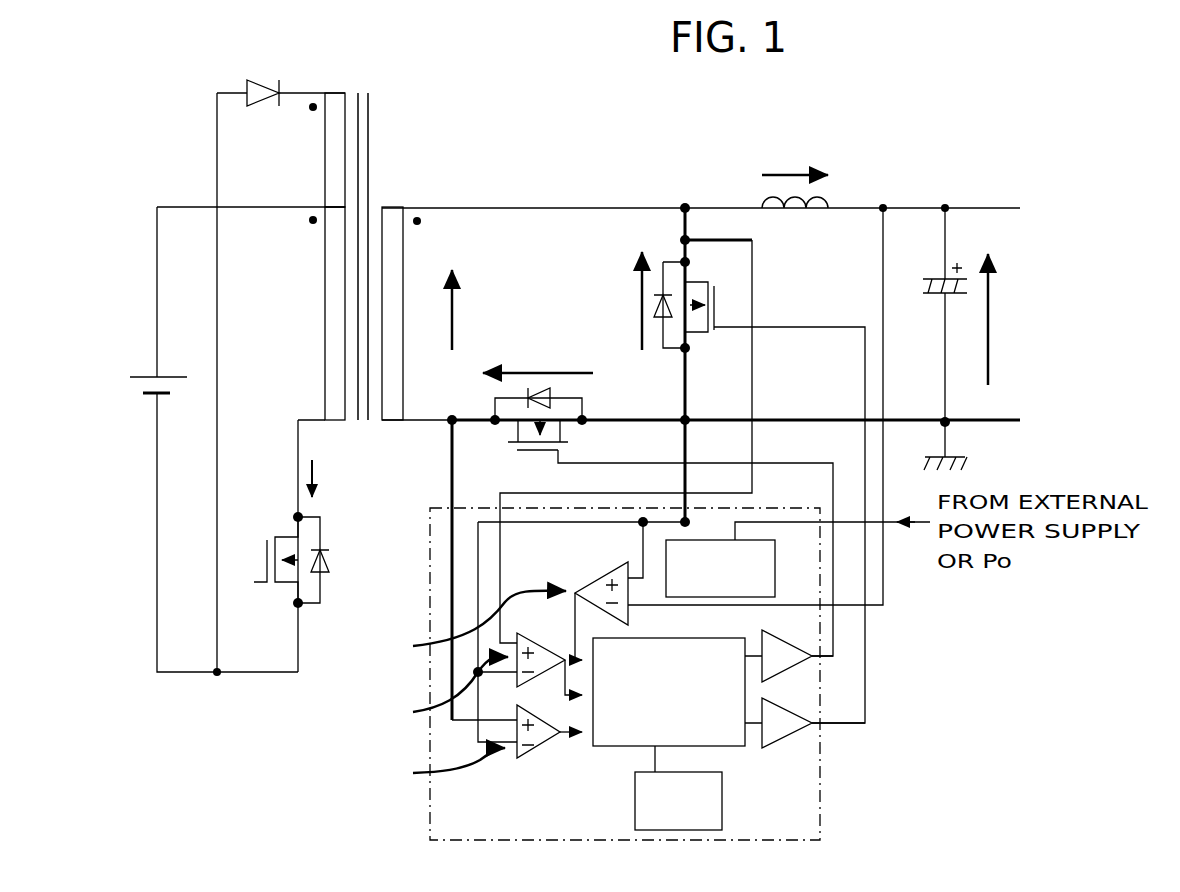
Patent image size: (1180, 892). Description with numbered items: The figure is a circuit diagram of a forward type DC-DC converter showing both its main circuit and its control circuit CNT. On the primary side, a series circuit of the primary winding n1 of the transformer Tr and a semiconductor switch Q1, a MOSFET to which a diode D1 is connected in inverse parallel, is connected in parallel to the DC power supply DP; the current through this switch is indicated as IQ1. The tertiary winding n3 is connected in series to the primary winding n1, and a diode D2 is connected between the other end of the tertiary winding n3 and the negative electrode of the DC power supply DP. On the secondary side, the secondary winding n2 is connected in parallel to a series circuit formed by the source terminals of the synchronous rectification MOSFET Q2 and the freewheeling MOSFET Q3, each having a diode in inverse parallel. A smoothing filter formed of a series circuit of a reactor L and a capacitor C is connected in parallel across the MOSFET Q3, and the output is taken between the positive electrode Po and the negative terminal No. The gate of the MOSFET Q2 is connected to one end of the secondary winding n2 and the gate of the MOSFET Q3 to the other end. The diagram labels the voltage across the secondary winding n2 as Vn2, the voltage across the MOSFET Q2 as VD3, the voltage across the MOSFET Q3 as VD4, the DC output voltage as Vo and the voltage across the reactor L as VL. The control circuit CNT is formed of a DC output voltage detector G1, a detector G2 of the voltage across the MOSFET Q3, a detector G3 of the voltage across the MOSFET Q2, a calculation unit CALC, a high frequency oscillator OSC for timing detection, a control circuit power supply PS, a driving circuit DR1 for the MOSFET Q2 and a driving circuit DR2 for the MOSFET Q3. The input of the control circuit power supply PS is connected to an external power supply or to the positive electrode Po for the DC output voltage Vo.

The DC power supply DP is at (145, 369).
The diode D2 is at (281, 74).
The transformer Tr is at (297, 382).
The tertiary winding n3 is at (312, 150).
The primary winding n1 is at (251, 439).
The secondary winding n2 is at (409, 313).
The negative output terminal No is at (753, 422).
The positive electrode Po is at (965, 209).
The voltage across the secondary winding Vn2 is at (473, 310).
The switching element current IQ1 is at (337, 478).
The semiconductor switch Q1 is at (273, 556).
The diode D1 is at (333, 560).
The voltage across the rectifying MOSFET VD3 is at (538, 360).
The synchronous rectification MOSFET Q2 is at (670, 538).
The freewheeling MOSFET Q3 is at (682, 481).
The voltage across the freewheeling MOSFET VD4 is at (633, 301).
The reactor L is at (795, 220).
The voltage across the reactor VL is at (795, 156).
The capacitor C is at (942, 339).
The DC output voltage Vo is at (1006, 319).
The control circuit CNT is at (826, 812).
The control circuit power supply PS is at (784, 568).
The DC output voltage detector G1 is at (466, 624).
The detector of the voltage across the MOSFET Q3 G2 is at (441, 690).
The detector of the voltage across the MOSFET Q2 G3 is at (435, 767).
The calculation unit CALC is at (669, 692).
The driving circuit DR1 is at (810, 667).
The driving circuit DR2 is at (810, 709).
The high frequency oscillator OSC is at (722, 816).